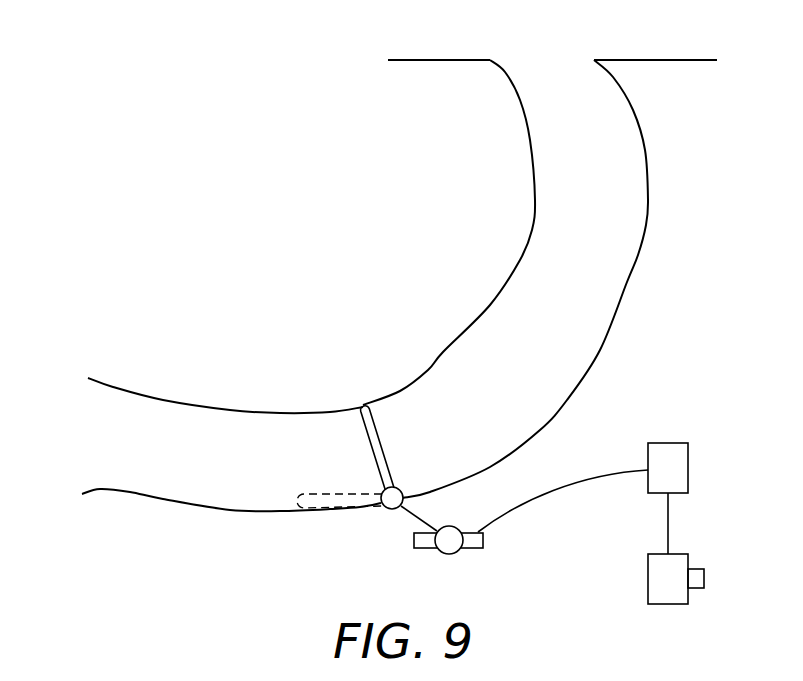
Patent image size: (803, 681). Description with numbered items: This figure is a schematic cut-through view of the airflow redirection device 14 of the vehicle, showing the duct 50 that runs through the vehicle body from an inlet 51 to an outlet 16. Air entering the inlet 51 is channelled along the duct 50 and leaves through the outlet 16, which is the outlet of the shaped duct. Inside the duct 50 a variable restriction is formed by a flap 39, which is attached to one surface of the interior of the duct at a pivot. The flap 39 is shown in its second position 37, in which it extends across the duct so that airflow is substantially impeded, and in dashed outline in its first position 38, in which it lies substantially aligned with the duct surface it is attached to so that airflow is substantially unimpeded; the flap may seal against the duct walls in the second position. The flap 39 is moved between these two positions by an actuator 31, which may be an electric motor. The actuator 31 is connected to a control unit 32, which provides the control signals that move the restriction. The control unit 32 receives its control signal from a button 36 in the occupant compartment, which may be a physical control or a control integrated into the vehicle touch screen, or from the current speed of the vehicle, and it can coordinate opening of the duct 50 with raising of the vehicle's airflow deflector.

The outlet 16 is at (547, 66).
The inlet 51 is at (108, 437).
The duct 50 is at (150, 500).
The airflow redirection device 14 is at (72, 521).
The first position 38 is at (313, 497).
The second position 37 is at (378, 430).
The flap 39 is at (380, 524).
The actuator 31 is at (485, 538).
The control unit 32 is at (688, 455).
The button 36 is at (704, 580).